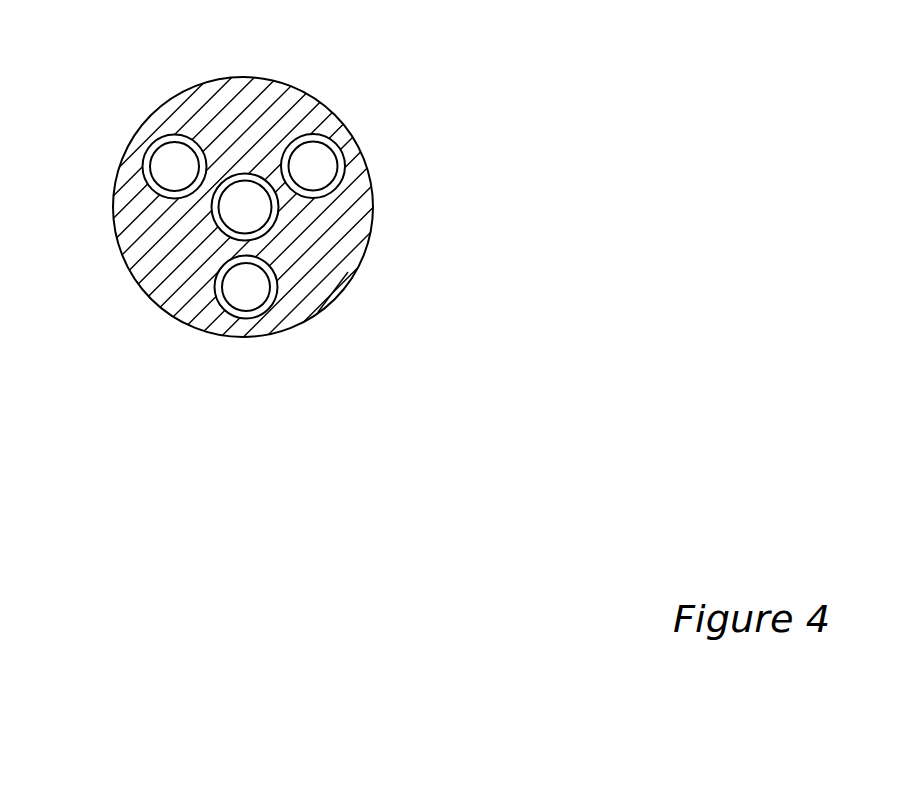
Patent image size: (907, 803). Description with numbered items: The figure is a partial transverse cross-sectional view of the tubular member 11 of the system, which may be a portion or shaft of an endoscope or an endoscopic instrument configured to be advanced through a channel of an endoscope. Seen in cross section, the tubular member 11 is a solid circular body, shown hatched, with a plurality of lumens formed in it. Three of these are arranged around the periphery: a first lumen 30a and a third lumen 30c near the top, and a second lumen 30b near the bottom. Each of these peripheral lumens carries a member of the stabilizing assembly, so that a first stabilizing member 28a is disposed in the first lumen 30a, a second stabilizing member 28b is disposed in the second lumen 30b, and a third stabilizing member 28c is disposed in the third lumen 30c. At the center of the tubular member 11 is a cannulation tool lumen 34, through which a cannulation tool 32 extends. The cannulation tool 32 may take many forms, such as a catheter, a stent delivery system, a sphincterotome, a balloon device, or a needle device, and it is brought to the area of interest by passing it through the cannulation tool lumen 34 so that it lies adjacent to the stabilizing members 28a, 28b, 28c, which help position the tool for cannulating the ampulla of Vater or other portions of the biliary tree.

The tubular member 11 is at (293, 72).
The first stabilizing member 28a is at (164, 167).
The second stabilizing member 28b is at (250, 295).
The third stabilizing member 28c is at (320, 167).
The first lumen 30a is at (168, 138).
The second lumen 30b is at (233, 315).
The third lumen 30c is at (317, 138).
The cannulation tool 32 is at (253, 215).
The cannulation tool lumen 34 is at (218, 222).